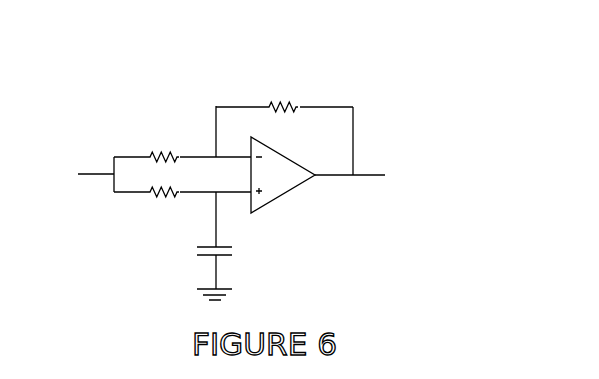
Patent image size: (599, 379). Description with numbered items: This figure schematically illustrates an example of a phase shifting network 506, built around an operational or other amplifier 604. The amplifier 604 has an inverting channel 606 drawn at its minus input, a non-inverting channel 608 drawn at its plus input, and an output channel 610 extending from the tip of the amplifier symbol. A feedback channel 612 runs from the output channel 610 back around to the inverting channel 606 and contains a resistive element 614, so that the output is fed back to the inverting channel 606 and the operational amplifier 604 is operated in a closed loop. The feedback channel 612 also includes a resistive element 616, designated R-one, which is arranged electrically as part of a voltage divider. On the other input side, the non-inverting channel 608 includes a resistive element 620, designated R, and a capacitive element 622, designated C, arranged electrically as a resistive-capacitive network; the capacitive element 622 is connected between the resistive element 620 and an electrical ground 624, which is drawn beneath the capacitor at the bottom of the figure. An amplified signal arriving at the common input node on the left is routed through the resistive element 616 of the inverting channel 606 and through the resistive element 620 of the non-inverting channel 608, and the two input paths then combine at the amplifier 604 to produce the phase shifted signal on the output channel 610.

The phase shifting network 506 is at (270, 166).
The operational amplifier 604 is at (292, 189).
The inverting channel 606 is at (250, 192).
The non-inverting channel 608 is at (248, 190).
The output channel 610 is at (372, 175).
The feedback channel 612 is at (354, 134).
The resistive element 614 is at (300, 90).
The resistive element (R1) 616 is at (143, 145).
The resistive element (R) 620 is at (142, 203).
The capacitive element (C) 622 is at (189, 236).
The electrical ground 624 is at (224, 278).